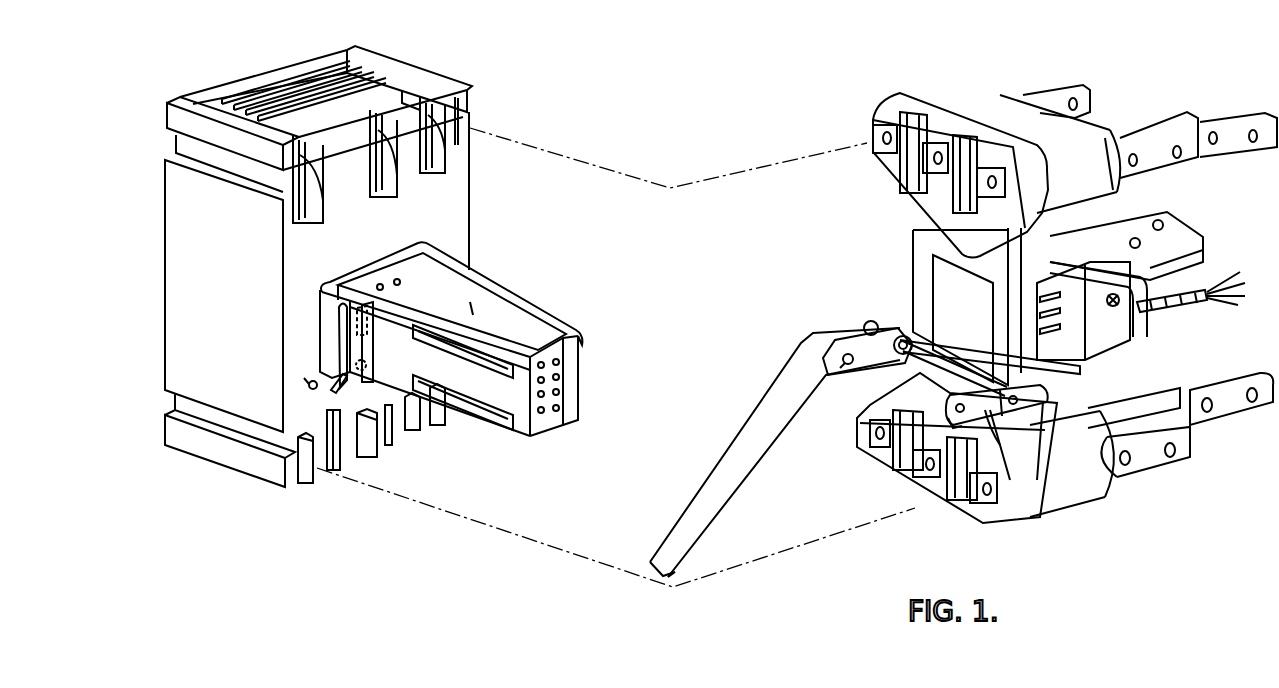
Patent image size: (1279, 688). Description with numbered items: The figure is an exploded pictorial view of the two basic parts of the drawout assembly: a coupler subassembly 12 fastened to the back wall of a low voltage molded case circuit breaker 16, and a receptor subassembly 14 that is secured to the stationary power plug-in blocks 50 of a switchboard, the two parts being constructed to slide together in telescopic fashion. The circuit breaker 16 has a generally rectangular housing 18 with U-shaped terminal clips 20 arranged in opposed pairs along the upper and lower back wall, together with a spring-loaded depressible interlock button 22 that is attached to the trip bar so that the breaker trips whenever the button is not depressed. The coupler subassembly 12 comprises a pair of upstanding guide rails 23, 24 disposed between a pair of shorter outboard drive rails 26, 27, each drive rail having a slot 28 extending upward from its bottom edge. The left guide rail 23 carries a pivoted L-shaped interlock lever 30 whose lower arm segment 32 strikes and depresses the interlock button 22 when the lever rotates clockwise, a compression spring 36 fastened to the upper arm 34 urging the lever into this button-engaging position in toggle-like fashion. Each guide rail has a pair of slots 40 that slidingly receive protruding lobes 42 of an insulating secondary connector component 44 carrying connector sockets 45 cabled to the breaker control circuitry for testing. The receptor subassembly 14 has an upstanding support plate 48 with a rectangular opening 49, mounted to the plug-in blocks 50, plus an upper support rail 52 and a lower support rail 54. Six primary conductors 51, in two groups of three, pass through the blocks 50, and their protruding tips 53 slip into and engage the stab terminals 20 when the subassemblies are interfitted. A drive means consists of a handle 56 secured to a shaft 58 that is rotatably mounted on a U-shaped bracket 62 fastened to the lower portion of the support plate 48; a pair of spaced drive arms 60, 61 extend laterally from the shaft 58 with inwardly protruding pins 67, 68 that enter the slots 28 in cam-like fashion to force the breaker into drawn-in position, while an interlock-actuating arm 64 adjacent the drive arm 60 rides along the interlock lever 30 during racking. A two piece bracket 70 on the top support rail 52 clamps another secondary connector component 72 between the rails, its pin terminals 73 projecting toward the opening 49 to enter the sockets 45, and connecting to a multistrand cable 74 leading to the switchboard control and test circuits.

The coupler subassembly 12 is at (454, 346).
The receptor subassembly 14 is at (963, 314).
The circuit breaker 16 is at (246, 320).
The housing 18 is at (173, 356).
The U-shaped terminal clips 20 is at (470, 118).
The interlock button 22 is at (310, 390).
The guide rail 23 is at (460, 297).
The guide rail 24 is at (440, 320).
The drive rail 26 is at (445, 258).
The drive rail 27 is at (322, 306).
The slot 28 is at (340, 328).
The interlock lever 30 is at (370, 370).
The lower arm segment 32 is at (350, 392).
The upper arm 34 is at (374, 352).
The compression spring 36 is at (370, 327).
The slots 40 is at (460, 352).
The protruding lobes 42 is at (493, 418).
The secondary connector component 44 is at (552, 335).
The connector sockets 45 is at (562, 404).
The support plate 48 is at (916, 252).
The rectangular opening 49 is at (920, 300).
The stationary power plug-in blocks 50 is at (955, 97).
The primary conductors 51 is at (1057, 100).
The upper support rail 52 is at (1140, 215).
The tips 53 is at (903, 148).
The lower support rail 54 is at (1085, 366).
The handle 56 is at (712, 512).
The shaft 58 is at (920, 378).
The drive arm 60 is at (862, 350).
The drive arm 61 is at (1015, 408).
The U-shaped bracket 62 is at (1047, 393).
The interlock-actuating arm 64 is at (1000, 425).
The pin 67 is at (953, 412).
The pin 68 is at (847, 364).
The two piece bracket 70 is at (1120, 280).
The secondary connector component 72 is at (1110, 330).
The pin terminals 73 is at (1035, 335).
The multistrand cable 74 is at (1195, 300).